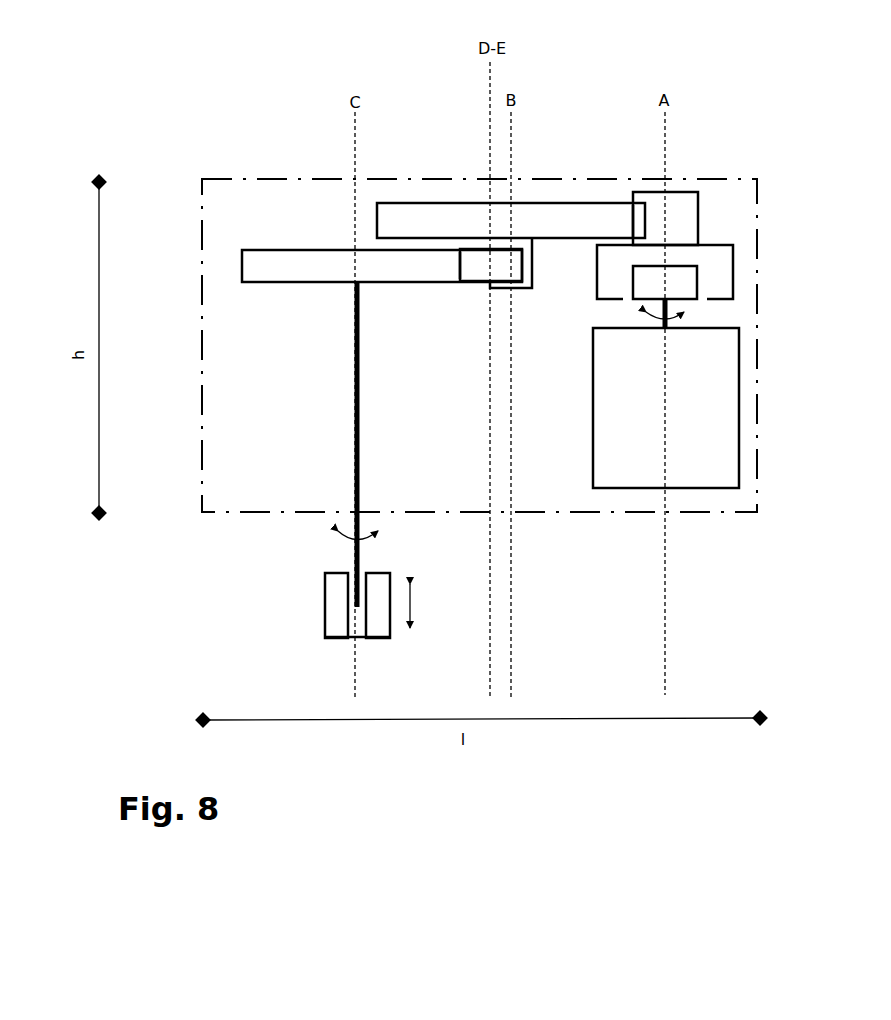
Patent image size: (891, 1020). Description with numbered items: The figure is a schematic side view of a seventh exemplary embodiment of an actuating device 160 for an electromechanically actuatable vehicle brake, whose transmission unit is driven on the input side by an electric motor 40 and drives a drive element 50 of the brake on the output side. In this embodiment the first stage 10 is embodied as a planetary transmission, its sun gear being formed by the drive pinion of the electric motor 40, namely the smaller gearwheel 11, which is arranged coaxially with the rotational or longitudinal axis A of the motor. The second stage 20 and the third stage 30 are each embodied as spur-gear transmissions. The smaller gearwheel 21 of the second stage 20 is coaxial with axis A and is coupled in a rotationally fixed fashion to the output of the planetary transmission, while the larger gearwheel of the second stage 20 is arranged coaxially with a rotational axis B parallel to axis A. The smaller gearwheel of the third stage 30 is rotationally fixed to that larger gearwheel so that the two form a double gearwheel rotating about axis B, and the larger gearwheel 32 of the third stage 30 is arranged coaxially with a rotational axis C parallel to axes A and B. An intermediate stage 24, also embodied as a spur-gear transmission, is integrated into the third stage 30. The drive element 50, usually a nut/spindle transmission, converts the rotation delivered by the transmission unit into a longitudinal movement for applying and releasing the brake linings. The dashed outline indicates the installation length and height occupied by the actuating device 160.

The first stage 10 is at (723, 272).
The smaller gearwheel 11 is at (680, 287).
The second stage 20 is at (629, 222).
The smaller gearwheel of the second stage 21 is at (675, 207).
The intermediate stage 24 is at (477, 275).
The third stage 30 is at (456, 264).
The larger gearwheel of the third stage 32 is at (262, 272).
The electric motor 40 is at (625, 458).
The drive element 50 is at (320, 618).
The actuating device 160 is at (758, 508).